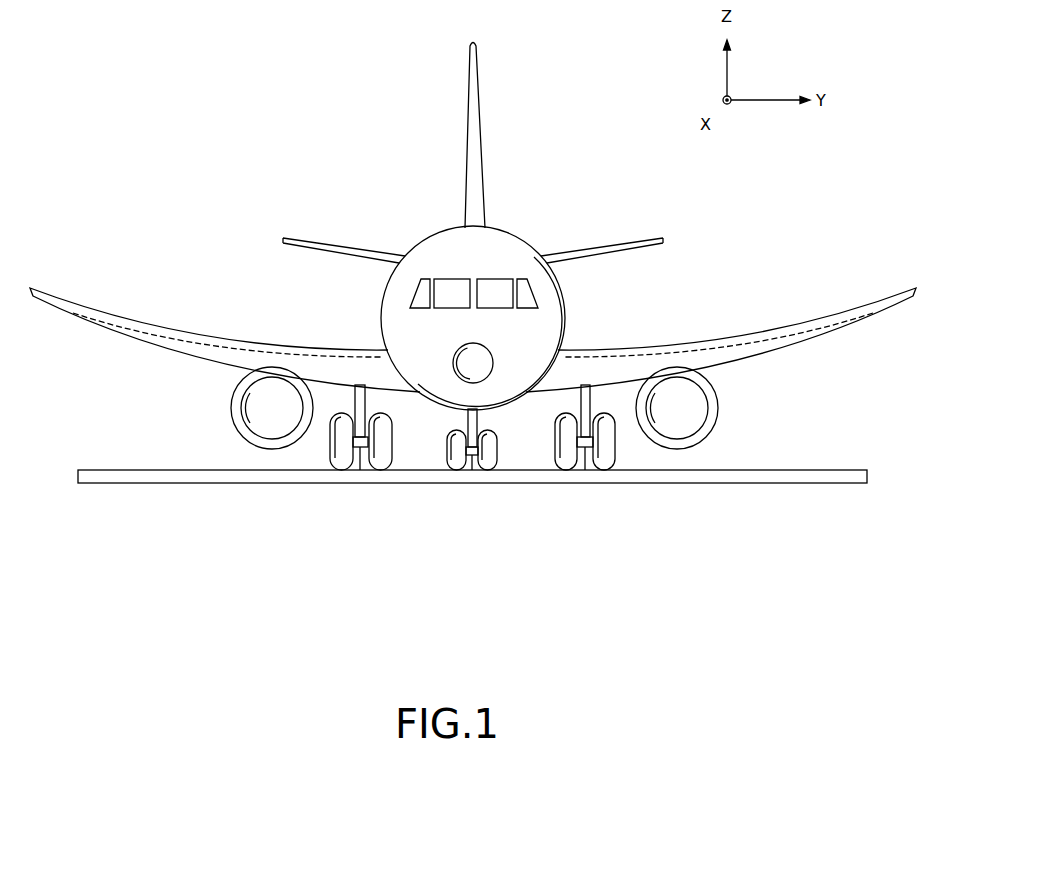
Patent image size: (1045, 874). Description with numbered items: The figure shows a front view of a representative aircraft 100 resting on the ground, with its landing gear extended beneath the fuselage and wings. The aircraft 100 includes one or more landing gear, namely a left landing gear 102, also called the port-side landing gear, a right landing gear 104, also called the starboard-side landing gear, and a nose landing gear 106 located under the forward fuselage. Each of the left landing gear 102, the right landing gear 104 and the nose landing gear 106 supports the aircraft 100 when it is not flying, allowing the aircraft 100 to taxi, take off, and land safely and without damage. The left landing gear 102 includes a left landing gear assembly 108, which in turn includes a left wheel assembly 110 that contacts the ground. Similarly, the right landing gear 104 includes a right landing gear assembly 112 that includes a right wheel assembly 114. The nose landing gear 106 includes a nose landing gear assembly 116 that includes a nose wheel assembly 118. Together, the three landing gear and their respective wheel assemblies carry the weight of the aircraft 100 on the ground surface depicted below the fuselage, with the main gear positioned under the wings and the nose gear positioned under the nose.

The aircraft 100 is at (318, 143).
The left landing gear 102 is at (646, 458).
The right landing gear 104 is at (343, 397).
The nose landing gear 106 is at (437, 458).
The left landing gear assembly 108 is at (481, 413).
The left wheel assembly 110 is at (583, 448).
The right landing gear assembly 112 is at (352, 440).
The right wheel assembly 114 is at (360, 458).
The nose landing gear assembly 116 is at (496, 462).
The nose wheel assembly 118 is at (472, 455).